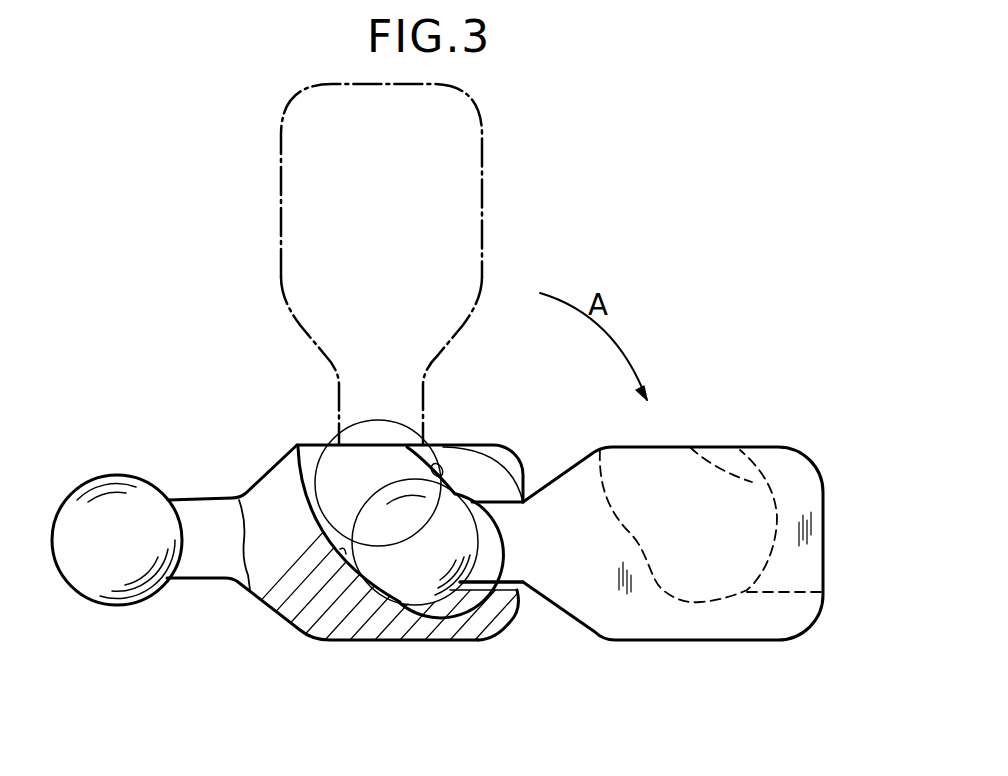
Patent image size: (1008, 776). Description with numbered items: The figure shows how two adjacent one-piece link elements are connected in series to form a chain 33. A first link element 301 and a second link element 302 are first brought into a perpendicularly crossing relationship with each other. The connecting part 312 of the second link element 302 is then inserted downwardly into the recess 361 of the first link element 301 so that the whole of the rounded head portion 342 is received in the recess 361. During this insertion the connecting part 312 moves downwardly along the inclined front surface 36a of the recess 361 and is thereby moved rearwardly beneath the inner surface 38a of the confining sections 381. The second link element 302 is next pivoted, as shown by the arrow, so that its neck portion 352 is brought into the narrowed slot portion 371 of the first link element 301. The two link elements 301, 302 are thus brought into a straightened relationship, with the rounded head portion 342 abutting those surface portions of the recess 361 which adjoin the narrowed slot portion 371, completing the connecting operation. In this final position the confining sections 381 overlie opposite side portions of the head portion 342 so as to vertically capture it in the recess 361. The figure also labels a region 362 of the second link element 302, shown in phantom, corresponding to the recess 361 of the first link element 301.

The first link element 301 is at (116, 460).
The second link element 302 is at (710, 397).
The chain 33 is at (777, 362).
The connecting part of the second link element 312 is at (322, 428).
The recess of the first link element 361 is at (303, 450).
The inclined front surface 36a is at (345, 556).
The rounded head portion 342 is at (572, 660).
The neck portion 352 is at (415, 387).
The narrowed slot portion 371 is at (479, 583).
The confining sections 381 is at (437, 460).
The inner surface of the confining sections 38a is at (437, 482).
The cavity of second arm 362 is at (700, 587).